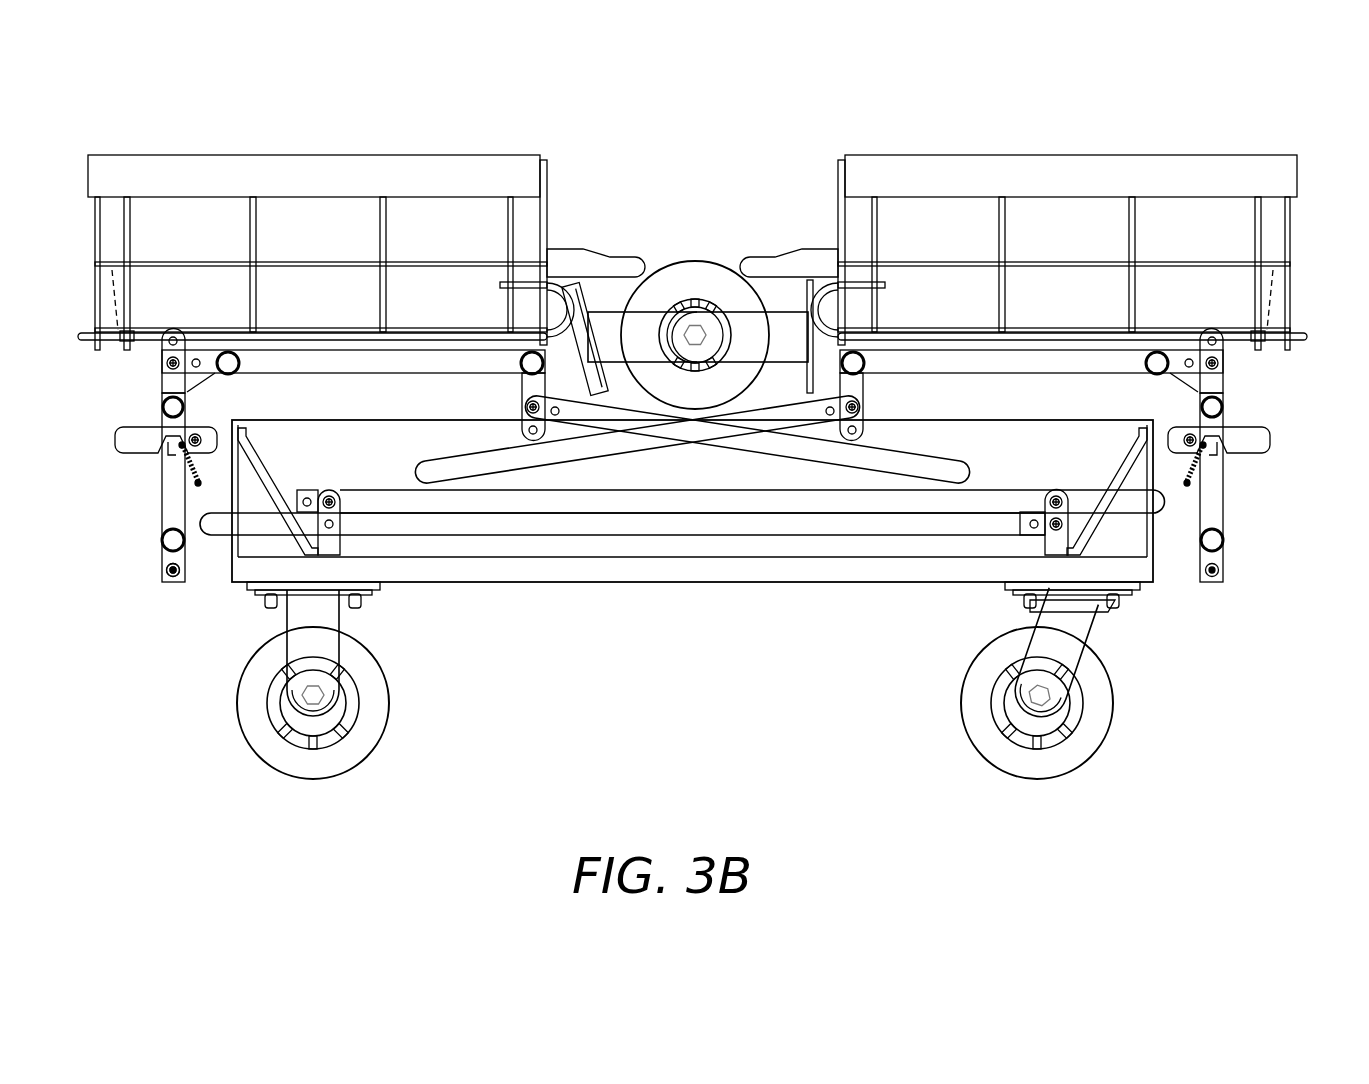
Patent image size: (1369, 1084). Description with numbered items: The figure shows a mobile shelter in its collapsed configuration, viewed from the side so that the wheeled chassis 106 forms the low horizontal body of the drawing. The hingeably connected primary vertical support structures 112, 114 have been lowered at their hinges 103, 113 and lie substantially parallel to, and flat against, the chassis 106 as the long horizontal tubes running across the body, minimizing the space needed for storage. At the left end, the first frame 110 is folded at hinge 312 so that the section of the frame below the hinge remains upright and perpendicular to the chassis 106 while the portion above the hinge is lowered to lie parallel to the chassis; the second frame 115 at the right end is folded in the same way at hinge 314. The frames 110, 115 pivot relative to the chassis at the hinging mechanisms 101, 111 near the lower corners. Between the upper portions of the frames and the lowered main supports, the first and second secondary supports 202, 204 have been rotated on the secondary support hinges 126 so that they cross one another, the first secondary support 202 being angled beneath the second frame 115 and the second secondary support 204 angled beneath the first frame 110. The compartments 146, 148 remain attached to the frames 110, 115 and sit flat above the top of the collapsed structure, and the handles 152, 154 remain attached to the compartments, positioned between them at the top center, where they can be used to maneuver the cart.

The hinging mechanism 101 is at (168, 573).
The hinge 103 is at (330, 498).
The chassis 106 is at (713, 568).
The first frame 110 is at (293, 365).
The hinging mechanism 111 is at (1216, 572).
The primary vertical support structure 112 is at (428, 505).
The hinge 113 is at (1057, 498).
The primary vertical support structure 114 is at (885, 525).
The second frame 115 is at (1220, 405).
The secondary support hinge 126 is at (860, 410).
The compartment 146 is at (329, 166).
The compartment 148 is at (1037, 166).
The handle 152 is at (626, 258).
The handle 154 is at (763, 262).
The first secondary support 202 is at (931, 465).
The second secondary support 204 is at (455, 468).
The hinge 312 is at (170, 363).
The hinge 314 is at (1217, 363).